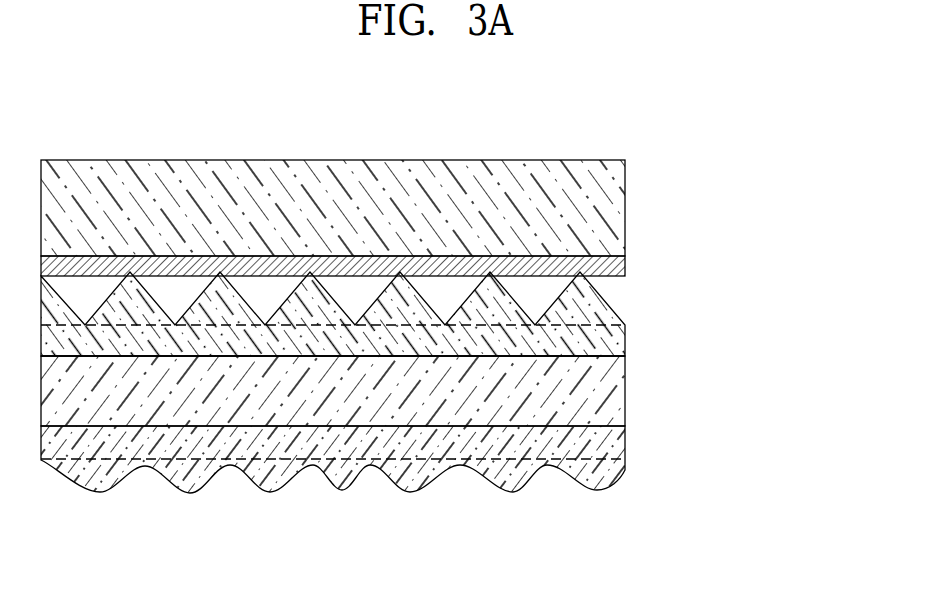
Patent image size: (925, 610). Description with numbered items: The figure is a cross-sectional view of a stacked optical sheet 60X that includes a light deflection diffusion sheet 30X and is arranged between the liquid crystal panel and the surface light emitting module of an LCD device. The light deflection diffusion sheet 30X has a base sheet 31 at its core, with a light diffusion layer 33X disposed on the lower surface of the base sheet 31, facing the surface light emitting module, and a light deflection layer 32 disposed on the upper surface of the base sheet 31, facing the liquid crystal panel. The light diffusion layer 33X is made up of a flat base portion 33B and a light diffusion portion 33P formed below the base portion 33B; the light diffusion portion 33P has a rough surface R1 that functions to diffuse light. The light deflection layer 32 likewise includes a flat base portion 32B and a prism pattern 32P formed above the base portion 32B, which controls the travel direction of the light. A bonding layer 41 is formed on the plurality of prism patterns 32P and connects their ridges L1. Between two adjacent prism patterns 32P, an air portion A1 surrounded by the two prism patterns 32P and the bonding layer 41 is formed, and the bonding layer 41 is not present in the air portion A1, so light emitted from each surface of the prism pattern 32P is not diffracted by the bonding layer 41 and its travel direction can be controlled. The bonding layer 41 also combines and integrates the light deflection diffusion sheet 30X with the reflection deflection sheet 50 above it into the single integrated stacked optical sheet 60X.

The stacked optical sheet 60X is at (628, 114).
The reflection deflection sheet 50 is at (617, 213).
The bonding layer 41 is at (617, 268).
The light deflection layer 32 is at (405, 314).
The prism pattern 32P is at (593, 308).
The base portion 32B is at (617, 344).
The base sheet 31 is at (620, 391).
The light diffusion layer 33X is at (412, 459).
The base portion 33B is at (620, 443).
The light diffusion portion 33P is at (613, 478).
The light deflection diffusion sheet 30X is at (449, 382).
The air portion A1 is at (175, 290).
The ridges L1 is at (221, 275).
The rough surface R1 is at (511, 491).